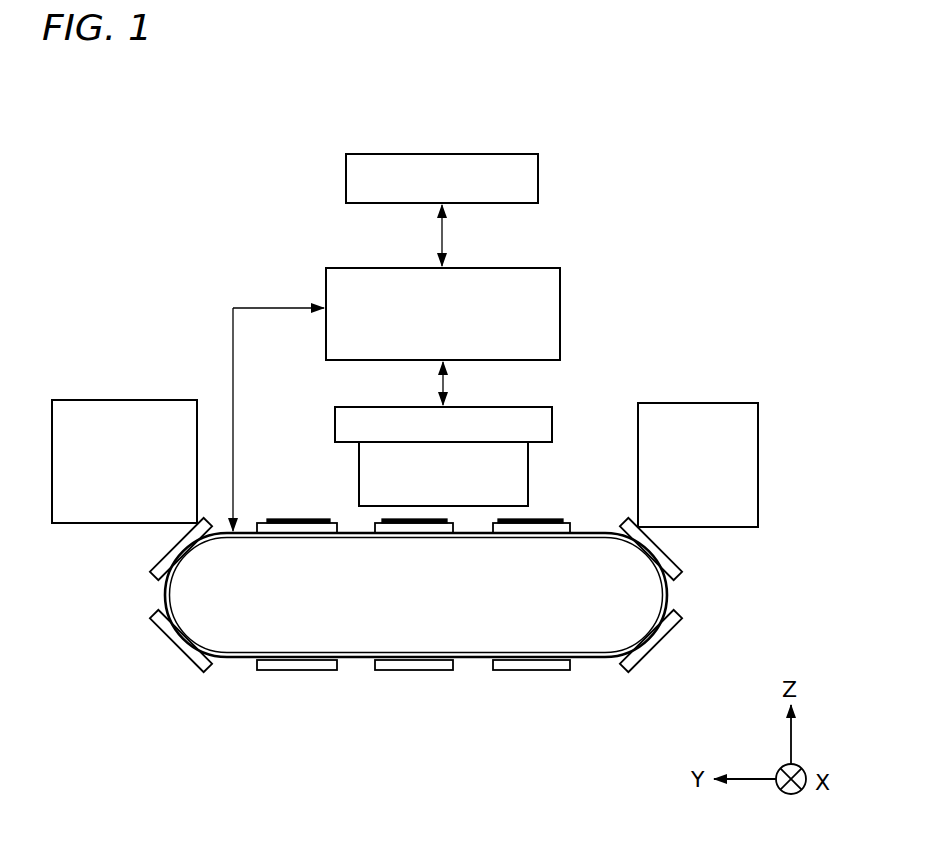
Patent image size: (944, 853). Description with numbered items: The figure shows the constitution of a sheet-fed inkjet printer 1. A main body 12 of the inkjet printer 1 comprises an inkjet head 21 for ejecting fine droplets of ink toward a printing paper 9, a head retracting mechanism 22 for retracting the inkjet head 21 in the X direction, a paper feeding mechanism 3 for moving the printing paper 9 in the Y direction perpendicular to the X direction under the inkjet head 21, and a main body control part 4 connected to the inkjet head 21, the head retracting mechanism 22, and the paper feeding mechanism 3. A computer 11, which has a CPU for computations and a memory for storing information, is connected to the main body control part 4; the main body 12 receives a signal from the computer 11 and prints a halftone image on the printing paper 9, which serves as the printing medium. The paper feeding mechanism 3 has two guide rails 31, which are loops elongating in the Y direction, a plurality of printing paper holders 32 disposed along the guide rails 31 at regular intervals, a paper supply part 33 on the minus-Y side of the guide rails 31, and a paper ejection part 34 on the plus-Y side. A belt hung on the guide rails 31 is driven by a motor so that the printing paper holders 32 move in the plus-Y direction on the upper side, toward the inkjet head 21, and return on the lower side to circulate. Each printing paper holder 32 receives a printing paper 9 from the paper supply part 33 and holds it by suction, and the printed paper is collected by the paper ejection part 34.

The inkjet printer 1 is at (147, 166).
The paper feeding mechanism 3 is at (770, 471).
The main body control part 4 is at (326, 283).
The printing paper 9 is at (297, 519).
The computer 11 is at (346, 178).
The main body 12 is at (632, 348).
The inkjet head 21 is at (528, 473).
The head retracting mechanism 22 is at (552, 425).
The guide rails 31 is at (558, 709).
The printing paper holders 32 is at (315, 533).
The paper supply part 33 is at (697, 403).
The paper ejection part 34 is at (125, 400).